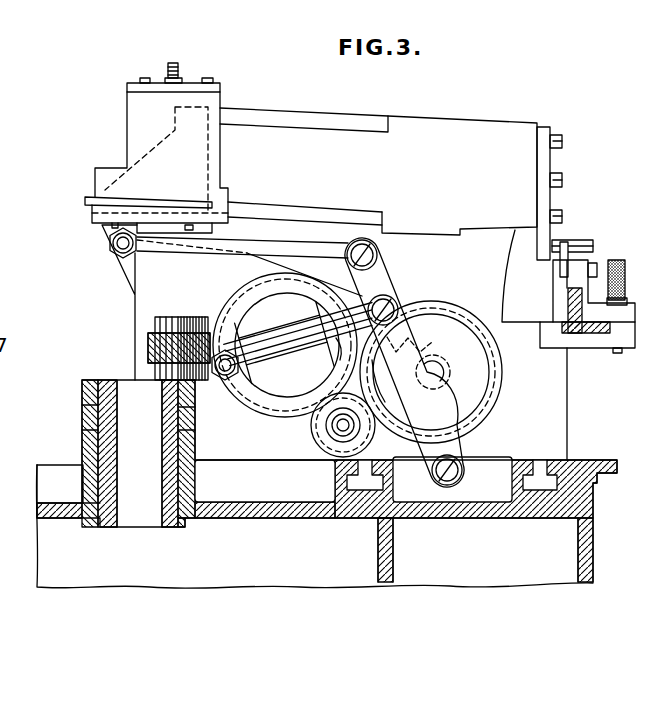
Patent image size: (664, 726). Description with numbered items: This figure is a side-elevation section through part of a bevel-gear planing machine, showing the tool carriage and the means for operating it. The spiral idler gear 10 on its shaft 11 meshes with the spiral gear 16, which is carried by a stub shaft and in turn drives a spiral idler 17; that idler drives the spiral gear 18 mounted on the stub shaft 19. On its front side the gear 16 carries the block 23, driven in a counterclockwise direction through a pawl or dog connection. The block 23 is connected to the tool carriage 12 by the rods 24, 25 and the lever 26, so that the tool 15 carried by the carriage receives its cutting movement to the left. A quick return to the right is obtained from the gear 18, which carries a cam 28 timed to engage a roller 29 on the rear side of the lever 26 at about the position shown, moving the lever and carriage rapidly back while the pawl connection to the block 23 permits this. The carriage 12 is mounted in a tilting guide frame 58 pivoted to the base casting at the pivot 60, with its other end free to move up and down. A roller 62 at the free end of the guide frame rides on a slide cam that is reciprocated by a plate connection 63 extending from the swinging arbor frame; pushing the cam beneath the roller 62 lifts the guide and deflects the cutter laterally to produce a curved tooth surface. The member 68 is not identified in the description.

The spiral idler gear 10 is at (147, 345).
The shaft 11 is at (163, 320).
The tool carriage 12 is at (128, 112).
The tool 15 is at (85, 197).
The spiral gear 16 is at (241, 407).
The spiral idler 17 is at (318, 435).
The spiral gear 18 is at (488, 418).
The stub shaft 19 is at (447, 380).
The block 23 is at (277, 323).
The rod 24 is at (310, 248).
The rod 25 is at (272, 350).
The lever 26 is at (405, 340).
The cam 28 is at (380, 368).
The roller 29 is at (482, 440).
The tilting guide frame 58 is at (485, 135).
The pivot 60 is at (100, 213).
The roller 62 is at (578, 243).
The plate connection 63 is at (583, 333).
The adjusting knob 68 is at (593, 263).